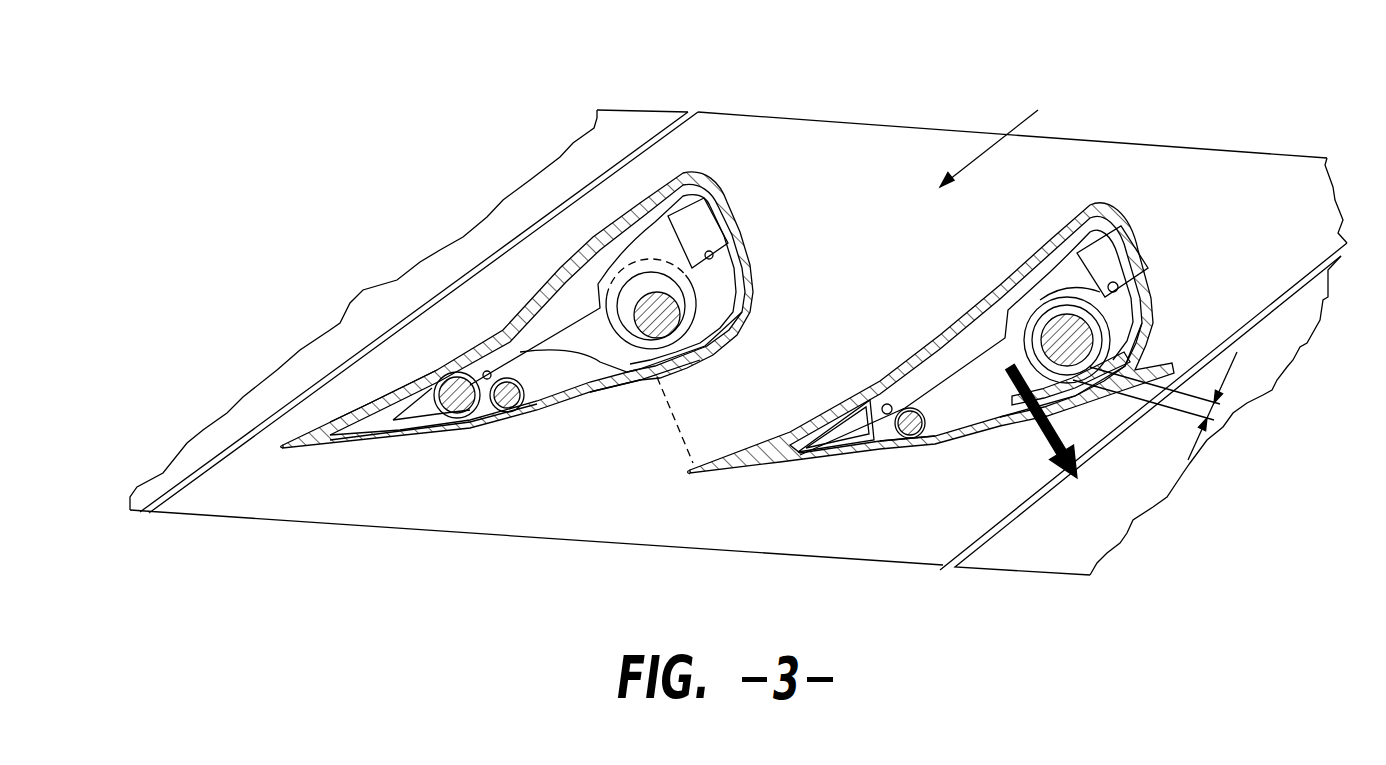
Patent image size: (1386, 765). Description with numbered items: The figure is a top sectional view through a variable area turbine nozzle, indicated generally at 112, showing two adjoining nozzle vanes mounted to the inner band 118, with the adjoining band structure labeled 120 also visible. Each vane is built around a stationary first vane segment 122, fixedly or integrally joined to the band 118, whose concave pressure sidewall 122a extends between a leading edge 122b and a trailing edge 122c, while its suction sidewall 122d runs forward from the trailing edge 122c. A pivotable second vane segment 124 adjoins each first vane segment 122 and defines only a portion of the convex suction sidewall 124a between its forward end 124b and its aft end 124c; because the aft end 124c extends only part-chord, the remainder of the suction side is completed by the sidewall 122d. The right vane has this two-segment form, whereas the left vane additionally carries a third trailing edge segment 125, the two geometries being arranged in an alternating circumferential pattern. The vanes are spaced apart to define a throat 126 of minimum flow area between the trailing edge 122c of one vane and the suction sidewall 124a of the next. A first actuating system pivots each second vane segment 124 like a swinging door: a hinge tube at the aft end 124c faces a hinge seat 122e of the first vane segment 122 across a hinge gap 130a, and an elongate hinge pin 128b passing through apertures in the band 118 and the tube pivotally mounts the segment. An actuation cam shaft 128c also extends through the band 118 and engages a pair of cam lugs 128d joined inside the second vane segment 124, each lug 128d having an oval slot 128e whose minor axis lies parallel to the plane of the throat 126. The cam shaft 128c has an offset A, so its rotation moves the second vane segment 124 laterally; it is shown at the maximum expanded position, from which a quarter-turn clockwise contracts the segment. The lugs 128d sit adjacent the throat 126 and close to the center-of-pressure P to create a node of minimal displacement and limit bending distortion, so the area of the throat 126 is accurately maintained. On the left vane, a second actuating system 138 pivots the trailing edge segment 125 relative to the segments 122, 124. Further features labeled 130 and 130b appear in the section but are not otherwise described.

The fastening assembly 112 is at (1012, 118).
The inner band 118 is at (652, 109).
The support panel 120 is at (148, 516).
The first vane segment 122 is at (568, 264).
The pressure sidewall 122a is at (330, 370).
The leading edge 122b is at (700, 177).
The trailing edge 122c is at (280, 452).
The suction sidewall 122d is at (400, 455).
The hinge seat 122e is at (838, 433).
The second vane segment 124 is at (741, 341).
The suction sidewall 124a is at (584, 418).
The forward end 124b is at (1152, 280).
The aft end 124c is at (890, 447).
The trailing edge segment 125 is at (348, 456).
The throat 126 is at (683, 445).
The hinge pin 128b is at (910, 393).
The actuation cam shaft 128c is at (688, 283).
The cam lugs 128d is at (550, 347).
The oval slot 128e is at (1150, 308).
The pin 130 is at (893, 453).
The hinge gap 130a is at (473, 428).
The pin 130b is at (367, 405).
The second actuating system 138 is at (470, 422).
The center-of-pressure P is at (1093, 432).
The radial offset A is at (1300, 343).